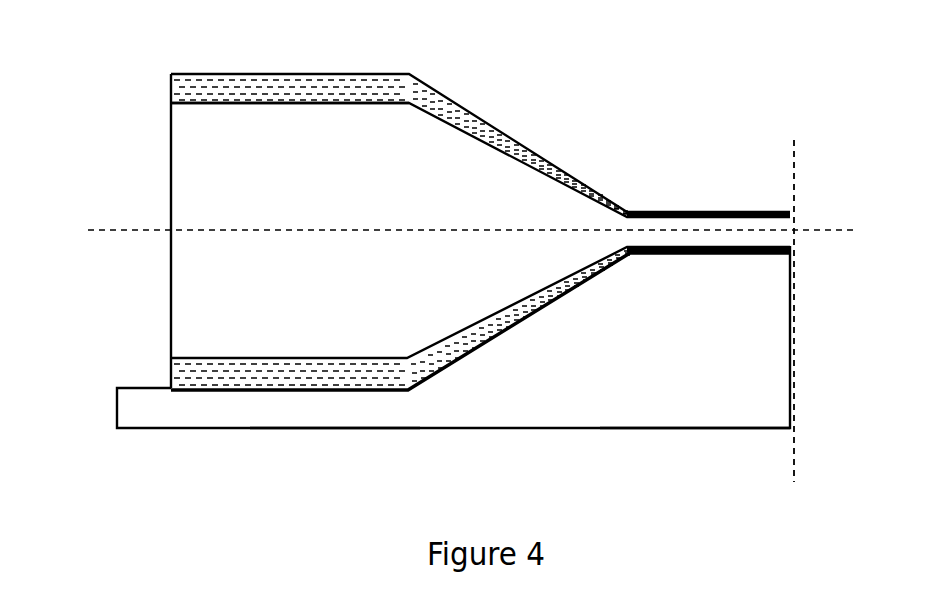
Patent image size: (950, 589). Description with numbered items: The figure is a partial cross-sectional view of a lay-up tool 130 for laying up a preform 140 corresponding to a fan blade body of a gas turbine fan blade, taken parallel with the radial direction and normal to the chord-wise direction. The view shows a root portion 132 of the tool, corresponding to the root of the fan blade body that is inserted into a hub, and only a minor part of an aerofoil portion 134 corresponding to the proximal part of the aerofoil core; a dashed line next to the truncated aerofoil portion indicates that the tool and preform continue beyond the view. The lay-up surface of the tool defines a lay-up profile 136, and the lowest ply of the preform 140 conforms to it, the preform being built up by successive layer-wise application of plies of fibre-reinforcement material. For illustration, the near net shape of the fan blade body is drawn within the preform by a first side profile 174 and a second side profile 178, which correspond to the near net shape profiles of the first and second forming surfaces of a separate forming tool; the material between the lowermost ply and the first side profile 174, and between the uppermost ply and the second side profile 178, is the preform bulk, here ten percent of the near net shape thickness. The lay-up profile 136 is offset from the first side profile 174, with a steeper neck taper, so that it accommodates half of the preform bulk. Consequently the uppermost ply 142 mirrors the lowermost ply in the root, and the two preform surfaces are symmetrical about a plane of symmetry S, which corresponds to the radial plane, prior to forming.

The lay-up tool 130 is at (197, 413).
The root portion 132 is at (320, 413).
The aerofoil portion 134 is at (687, 397).
The lay-up profile 136 is at (515, 328).
The preform 140 is at (217, 172).
The uppermost ply 142 is at (395, 72).
The first side profile 174 is at (250, 358).
The second side profile 178 is at (286, 105).
The plane of symmetry S is at (825, 228).